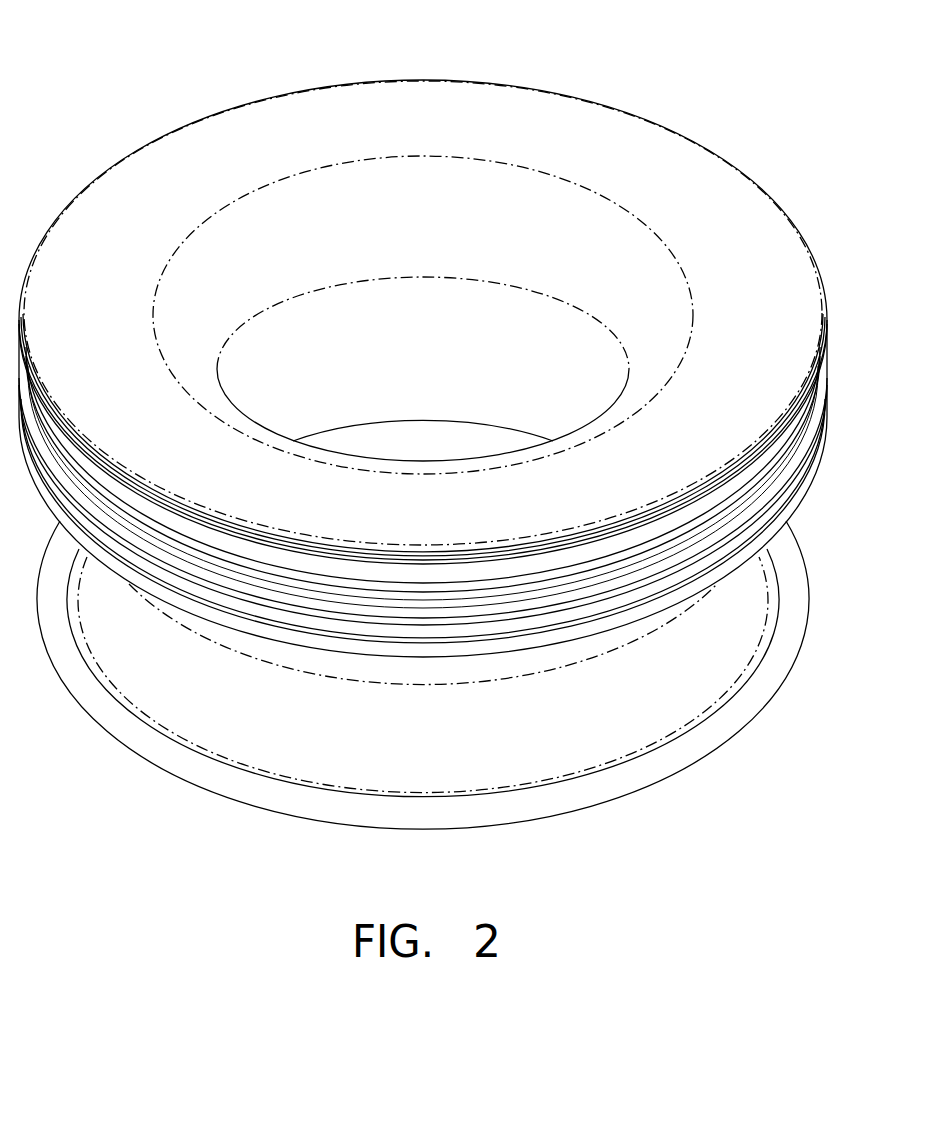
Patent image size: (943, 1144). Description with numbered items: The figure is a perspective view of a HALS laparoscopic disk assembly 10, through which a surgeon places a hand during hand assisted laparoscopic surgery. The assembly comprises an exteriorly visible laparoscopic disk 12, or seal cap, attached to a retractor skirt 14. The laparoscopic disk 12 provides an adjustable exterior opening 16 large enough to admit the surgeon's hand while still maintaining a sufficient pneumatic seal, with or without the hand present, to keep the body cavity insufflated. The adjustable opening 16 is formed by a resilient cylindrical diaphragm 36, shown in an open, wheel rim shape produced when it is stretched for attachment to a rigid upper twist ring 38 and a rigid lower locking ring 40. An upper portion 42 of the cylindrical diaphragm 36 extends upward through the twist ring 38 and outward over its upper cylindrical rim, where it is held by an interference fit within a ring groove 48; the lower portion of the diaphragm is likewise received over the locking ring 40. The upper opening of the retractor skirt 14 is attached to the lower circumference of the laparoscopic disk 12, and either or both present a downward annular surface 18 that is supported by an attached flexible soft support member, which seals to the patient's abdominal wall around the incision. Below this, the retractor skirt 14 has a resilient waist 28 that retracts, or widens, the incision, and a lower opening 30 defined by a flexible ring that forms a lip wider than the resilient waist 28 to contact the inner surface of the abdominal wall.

The laparoscopic disk assembly 10 is at (139, 104).
The laparoscopic disk 12 is at (729, 158).
The retractor skirt 14 is at (748, 741).
The adjustable exterior opening 16 is at (411, 62).
The downward annular surface 18 is at (710, 583).
The resilient waist 28 is at (723, 653).
The lower opening 30 is at (668, 783).
The cylindrical diaphragm 36 is at (632, 147).
The twist ring 38 is at (306, 568).
The locking ring 40 is at (788, 518).
The upper portion of the cylindrical diaphragm 42 is at (568, 118).
The ring groove 48 is at (55, 418).